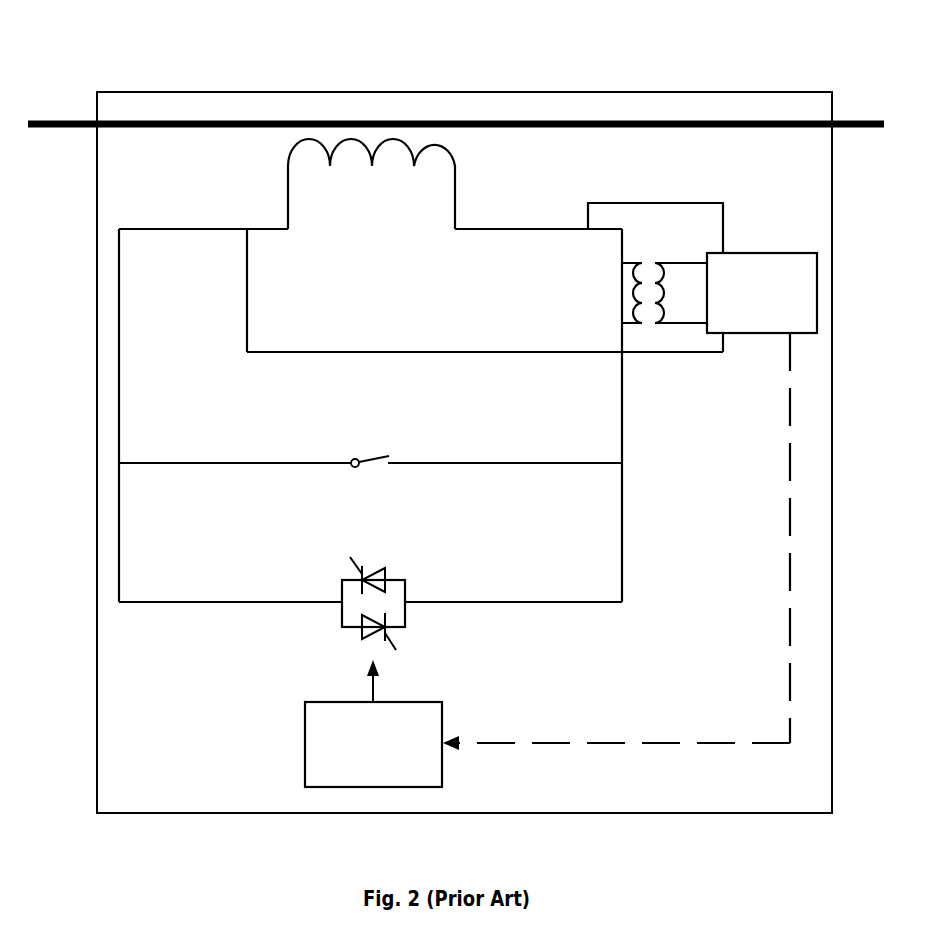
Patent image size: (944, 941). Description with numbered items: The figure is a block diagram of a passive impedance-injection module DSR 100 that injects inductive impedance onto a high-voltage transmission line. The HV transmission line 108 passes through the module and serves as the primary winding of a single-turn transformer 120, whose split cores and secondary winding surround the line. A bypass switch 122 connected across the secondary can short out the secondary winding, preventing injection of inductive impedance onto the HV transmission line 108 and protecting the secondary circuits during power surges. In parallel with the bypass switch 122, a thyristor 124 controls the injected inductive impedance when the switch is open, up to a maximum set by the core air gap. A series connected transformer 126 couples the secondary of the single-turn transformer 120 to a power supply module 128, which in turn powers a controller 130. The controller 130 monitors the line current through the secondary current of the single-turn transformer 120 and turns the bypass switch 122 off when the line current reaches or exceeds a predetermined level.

The passive impedance-injection module DSR 100 is at (658, 90).
The HV transmission line 108 is at (48, 120).
The single-turn transformer 120 is at (372, 166).
The bypass switch 122 is at (377, 458).
The thyristor 124 is at (368, 548).
The series connected transformer 126 is at (648, 275).
The power supply module 128 is at (765, 333).
The controller 130 is at (305, 755).